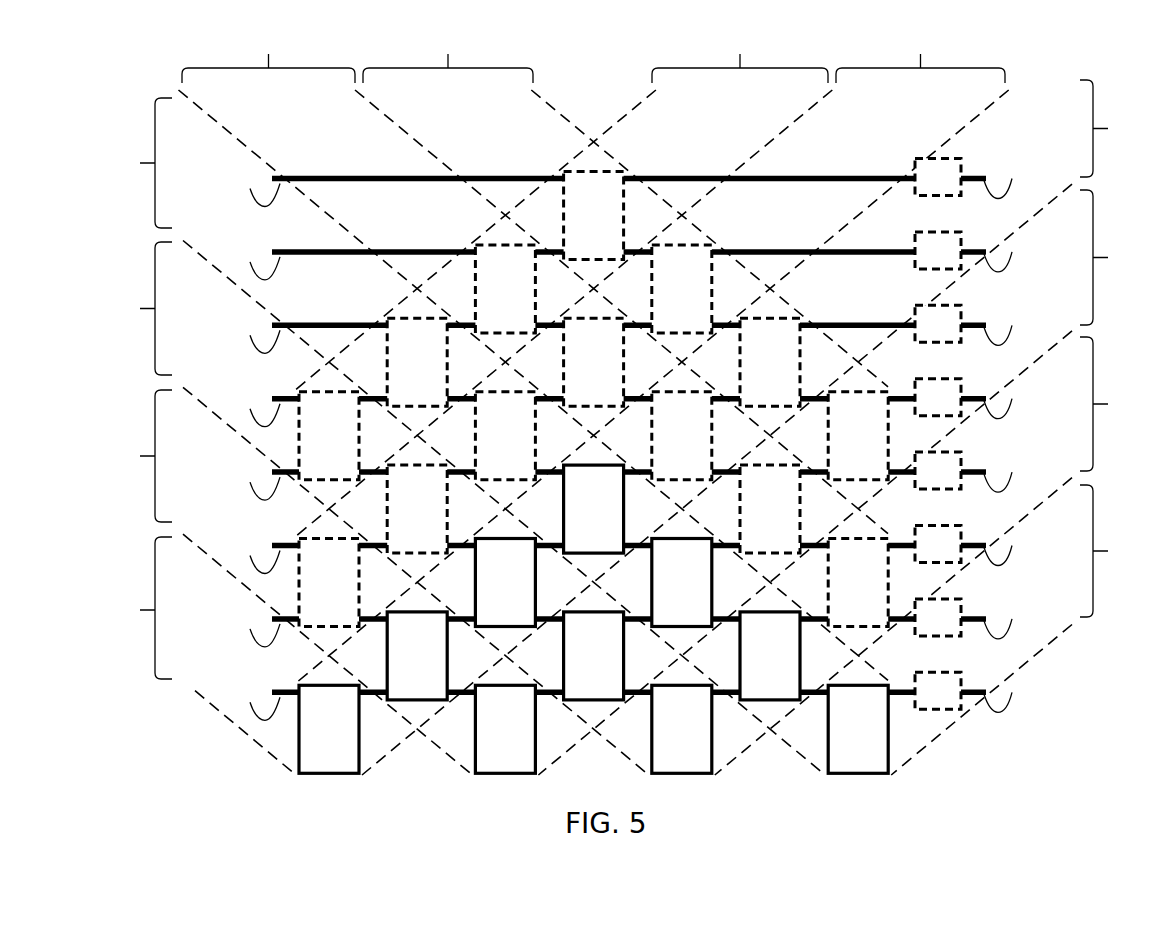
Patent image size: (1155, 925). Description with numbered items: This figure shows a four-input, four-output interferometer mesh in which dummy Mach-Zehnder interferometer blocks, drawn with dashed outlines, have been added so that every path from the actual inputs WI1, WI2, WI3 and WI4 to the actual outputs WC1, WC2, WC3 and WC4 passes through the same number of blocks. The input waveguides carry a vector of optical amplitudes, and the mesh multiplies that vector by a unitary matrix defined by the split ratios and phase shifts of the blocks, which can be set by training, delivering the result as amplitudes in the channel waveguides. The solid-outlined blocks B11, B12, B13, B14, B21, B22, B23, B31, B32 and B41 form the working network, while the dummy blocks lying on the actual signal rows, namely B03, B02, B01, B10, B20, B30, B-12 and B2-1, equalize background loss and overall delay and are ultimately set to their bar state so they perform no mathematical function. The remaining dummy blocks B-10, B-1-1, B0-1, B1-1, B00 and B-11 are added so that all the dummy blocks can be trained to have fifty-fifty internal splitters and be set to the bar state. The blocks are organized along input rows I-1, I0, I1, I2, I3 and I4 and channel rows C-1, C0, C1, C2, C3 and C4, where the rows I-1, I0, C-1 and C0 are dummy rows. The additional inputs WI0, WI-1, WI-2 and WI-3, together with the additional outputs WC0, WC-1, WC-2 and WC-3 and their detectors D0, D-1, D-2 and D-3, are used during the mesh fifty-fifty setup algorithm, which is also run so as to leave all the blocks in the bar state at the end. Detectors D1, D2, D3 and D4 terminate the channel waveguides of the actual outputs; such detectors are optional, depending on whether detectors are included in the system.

The dummy block B-1-1 is at (568, 226).
The dummy block B-10 is at (527, 300).
The dummy block B0-1 is at (704, 300).
The dummy block B-11 is at (395, 373).
The dummy block B00 is at (575, 373).
The dummy block B1-1 is at (748, 373).
The dummy block B-12 is at (307, 446).
The dummy block B01 is at (524, 446).
The dummy block B10 is at (700, 446).
The dummy block B2-1 is at (836, 446).
The dummy block B02 is at (436, 520).
The MZI block B11 is at (575, 520).
The dummy block B20 is at (752, 520).
The dummy block B03 is at (311, 593).
The MZI block B12 is at (524, 593).
The MZI block B21 is at (700, 593).
The dummy block B30 is at (840, 593).
The MZI block B13 is at (436, 667).
The MZI block B22 is at (575, 667).
The MZI block B31 is at (752, 667).
The MZI block B14 is at (311, 740).
The MZI block B23 is at (524, 740).
The MZI block B32 is at (700, 740).
The MZI block B41 is at (840, 740).
The detector D-3 is at (922, 188).
The detector D-2 is at (922, 262).
The detector D-1 is at (922, 335).
The detector D0 is at (925, 409).
The detector D1 is at (925, 482).
The detector D2 is at (925, 556).
The detector D3 is at (925, 629).
The detector D4 is at (925, 702).
The input waveguide WI-3 is at (603, 188).
The input waveguide WI-2 is at (603, 261).
The input waveguide WI-1 is at (603, 334).
The input waveguide WI0 is at (607, 408).
The input waveguide WI1 is at (607, 481).
The input waveguide WI2 is at (607, 555).
The input waveguide WI3 is at (607, 628).
The input waveguide WI4 is at (607, 701).
The channel waveguide WC-3 is at (1017, 184).
The channel waveguide WC-2 is at (1017, 257).
The channel waveguide WC-1 is at (1017, 330).
The channel waveguide WC0 is at (1013, 404).
The channel waveguide WC1 is at (1013, 477).
The channel waveguide WC2 is at (1013, 551).
The channel waveguide WC3 is at (1013, 624).
The channel waveguide WC4 is at (1013, 697).
The input row I0 is at (268, 55).
The input row I-1 is at (448, 55).
The channel row C-1 is at (740, 55).
The channel row C0 is at (920, 55).
The input row I1 is at (140, 163).
The input row I2 is at (140, 308).
The input row I3 is at (140, 456).
The input row I4 is at (140, 608).
The channel row C1 is at (1110, 128).
The channel row C2 is at (1110, 257).
The channel row C3 is at (1110, 404).
The channel row C4 is at (1110, 551).